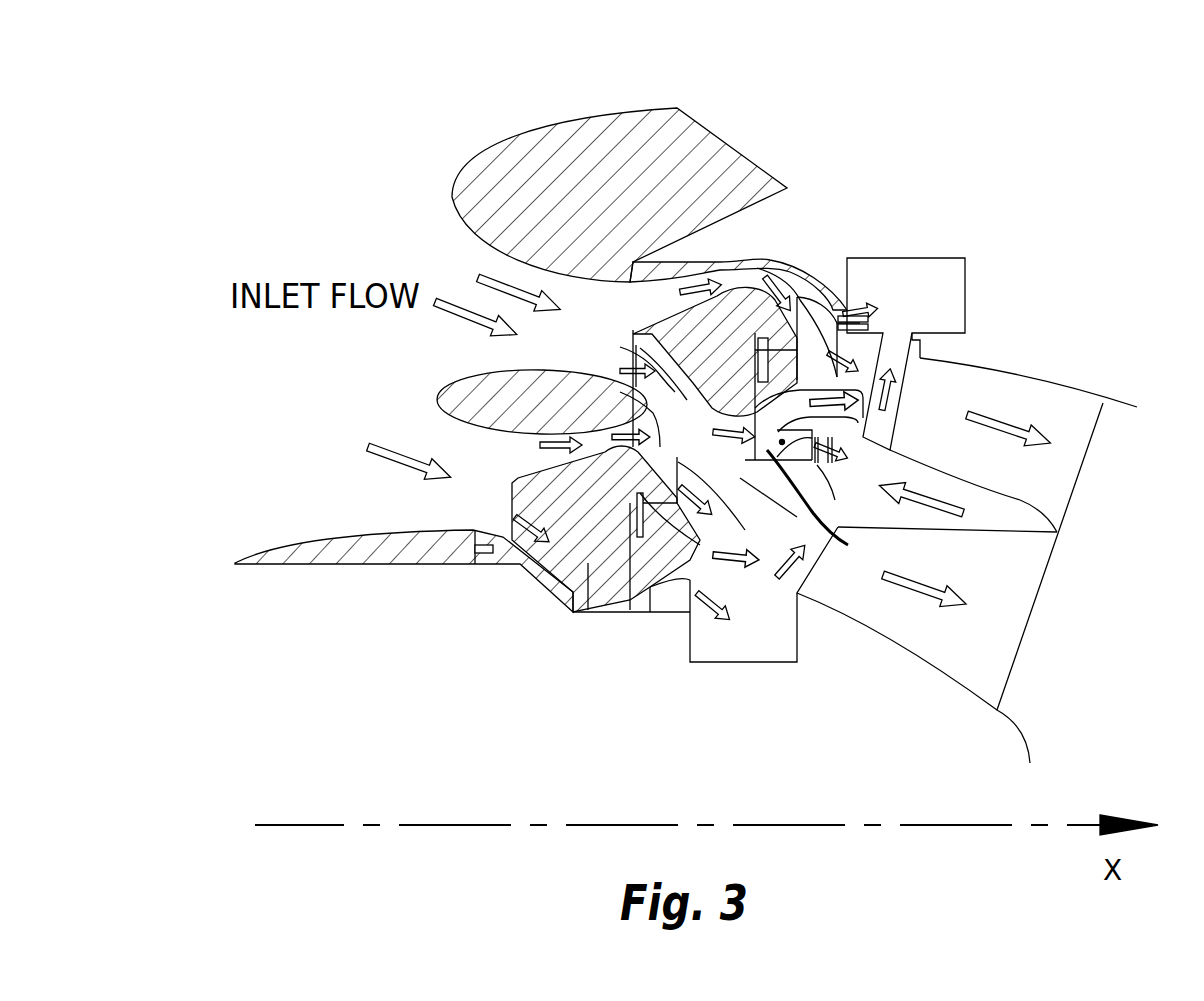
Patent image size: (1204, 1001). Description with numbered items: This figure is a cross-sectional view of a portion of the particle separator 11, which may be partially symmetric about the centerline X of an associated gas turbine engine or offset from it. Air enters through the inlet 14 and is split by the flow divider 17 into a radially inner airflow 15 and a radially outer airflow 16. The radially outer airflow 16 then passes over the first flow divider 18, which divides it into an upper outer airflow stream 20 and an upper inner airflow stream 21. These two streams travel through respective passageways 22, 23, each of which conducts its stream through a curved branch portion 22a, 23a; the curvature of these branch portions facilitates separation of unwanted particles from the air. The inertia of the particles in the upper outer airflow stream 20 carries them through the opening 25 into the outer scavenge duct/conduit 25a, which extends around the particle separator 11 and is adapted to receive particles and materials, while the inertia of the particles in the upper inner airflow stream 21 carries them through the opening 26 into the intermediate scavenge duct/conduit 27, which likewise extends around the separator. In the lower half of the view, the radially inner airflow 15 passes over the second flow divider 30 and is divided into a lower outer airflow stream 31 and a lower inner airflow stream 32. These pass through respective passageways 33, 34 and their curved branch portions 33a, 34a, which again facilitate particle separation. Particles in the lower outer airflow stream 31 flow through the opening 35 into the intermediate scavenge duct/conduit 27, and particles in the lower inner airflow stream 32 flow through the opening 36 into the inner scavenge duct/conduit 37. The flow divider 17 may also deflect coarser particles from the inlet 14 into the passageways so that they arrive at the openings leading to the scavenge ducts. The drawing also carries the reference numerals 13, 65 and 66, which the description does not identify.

The particle separator 11 is at (698, 113).
The fan blade 13 is at (527, 175).
The inlet 14 is at (463, 277).
The radially inner airflow 15 is at (473, 462).
The radially outer airflow 16 is at (519, 285).
The flow divider 17 is at (470, 400).
The first flow divider 18 is at (735, 300).
The upper outer airflow stream 20 is at (790, 282).
The upper inner airflow stream 21 is at (645, 358).
The passageway 22 is at (750, 263).
The curved branch portion 22a is at (780, 280).
The passageway 23 is at (687, 400).
The curved branch portion 23a is at (828, 504).
The opening 25 is at (847, 292).
The outer scavenge duct/conduit 25a is at (950, 290).
The opening 26 is at (815, 430).
The intermediate scavenge duct/conduit 27 is at (956, 492).
The second flow divider 30 is at (512, 483).
The lower outer airflow stream 31 is at (527, 388).
The lower inner airflow stream 32 is at (580, 574).
The passageway 33 is at (645, 439).
The curved branch portion 33a is at (620, 392).
The passageway 34 is at (628, 601).
The curved branch portion 34a is at (615, 618).
The opening 35 is at (718, 513).
The opening 36 is at (660, 600).
The inner scavenge duct/conduit 37 is at (730, 650).
The lower nozzle wall 65 is at (823, 573).
The bypass duct flow 66 is at (902, 403).